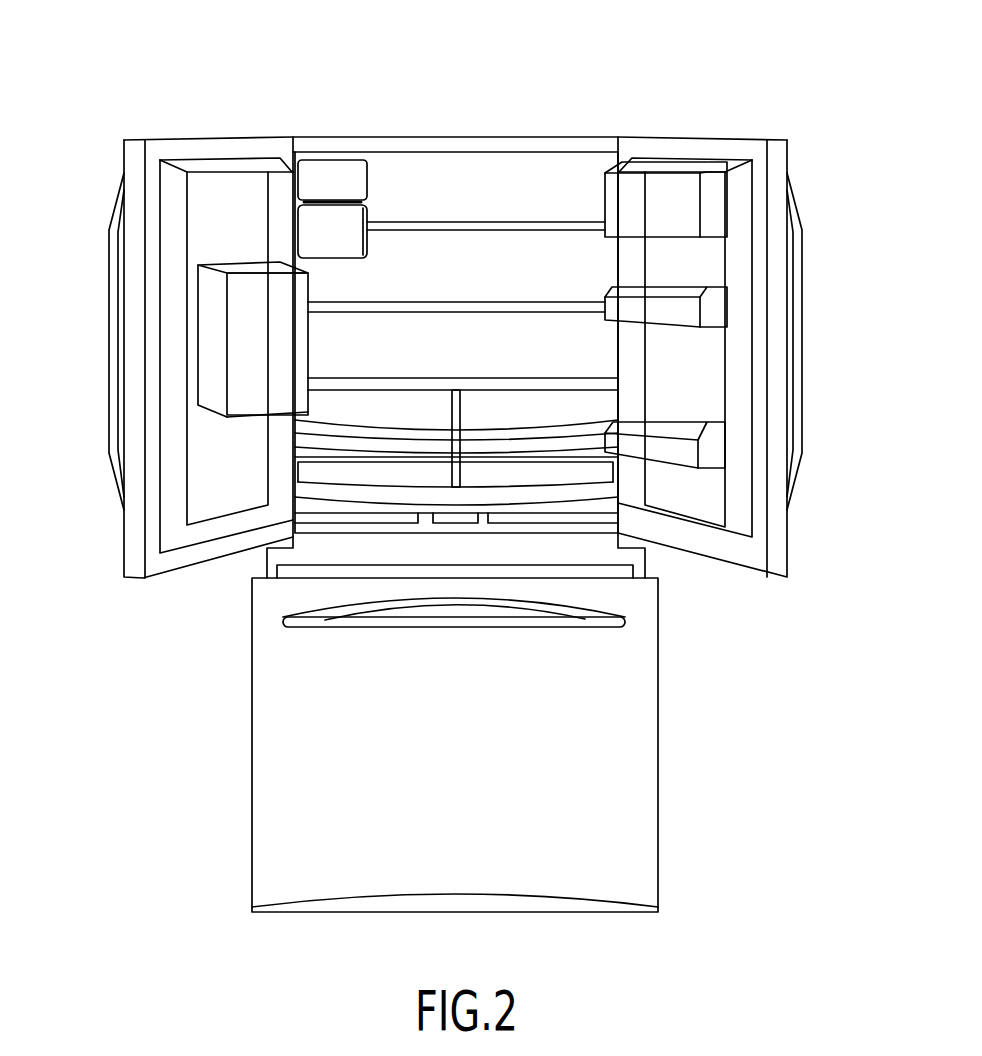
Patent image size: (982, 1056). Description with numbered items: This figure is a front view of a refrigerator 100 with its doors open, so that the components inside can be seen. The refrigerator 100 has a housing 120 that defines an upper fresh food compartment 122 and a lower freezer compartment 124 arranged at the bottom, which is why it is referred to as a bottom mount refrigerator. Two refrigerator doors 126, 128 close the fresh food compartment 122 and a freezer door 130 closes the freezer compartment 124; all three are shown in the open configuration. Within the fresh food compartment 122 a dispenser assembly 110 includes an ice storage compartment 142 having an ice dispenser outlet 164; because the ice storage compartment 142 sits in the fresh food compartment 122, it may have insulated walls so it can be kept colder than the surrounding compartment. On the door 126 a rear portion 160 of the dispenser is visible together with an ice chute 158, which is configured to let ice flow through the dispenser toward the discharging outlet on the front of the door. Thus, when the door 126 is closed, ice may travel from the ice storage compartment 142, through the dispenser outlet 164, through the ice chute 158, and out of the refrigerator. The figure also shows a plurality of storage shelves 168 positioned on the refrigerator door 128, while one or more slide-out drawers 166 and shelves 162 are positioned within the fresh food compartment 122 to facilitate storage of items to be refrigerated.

The refrigerator 100 is at (650, 98).
The dispenser assembly 110 is at (212, 337).
The housing 120 is at (252, 680).
The fresh food compartment 122 is at (465, 178).
The freezer compartment 124 is at (618, 738).
The refrigerator door 126 is at (178, 138).
The refrigerator door 128 is at (695, 138).
The freezer door 130 is at (607, 850).
The ice storage compartment 142 is at (357, 182).
The ice chute 158 is at (213, 262).
The rear portion 160 is at (243, 300).
The shelves 162 is at (562, 305).
The ice dispenser outlet 164 is at (328, 258).
The slide-out drawers 166 is at (578, 403).
The storage shelves 168 is at (668, 448).